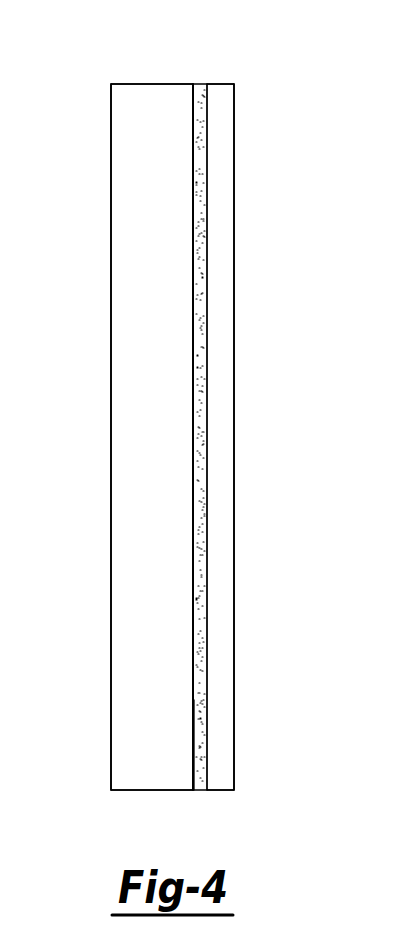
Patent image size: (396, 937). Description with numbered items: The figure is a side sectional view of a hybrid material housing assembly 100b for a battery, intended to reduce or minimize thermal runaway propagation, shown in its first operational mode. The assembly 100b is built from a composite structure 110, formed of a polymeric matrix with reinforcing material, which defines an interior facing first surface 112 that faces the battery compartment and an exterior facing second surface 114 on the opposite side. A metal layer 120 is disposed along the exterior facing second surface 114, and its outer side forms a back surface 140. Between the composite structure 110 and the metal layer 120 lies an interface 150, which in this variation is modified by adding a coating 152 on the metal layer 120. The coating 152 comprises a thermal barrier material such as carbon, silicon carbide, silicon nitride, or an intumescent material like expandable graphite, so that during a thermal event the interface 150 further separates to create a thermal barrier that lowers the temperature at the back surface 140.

The assembly 100b is at (257, 76).
The composite structure 110 is at (151, 84).
The interior facing first surface 112 is at (111, 267).
The exterior facing second surface 114 is at (193, 228).
The metal layer 120 is at (228, 790).
The back surface 140 is at (234, 560).
The interface 150 is at (211, 438).
The coating 152 is at (200, 790).